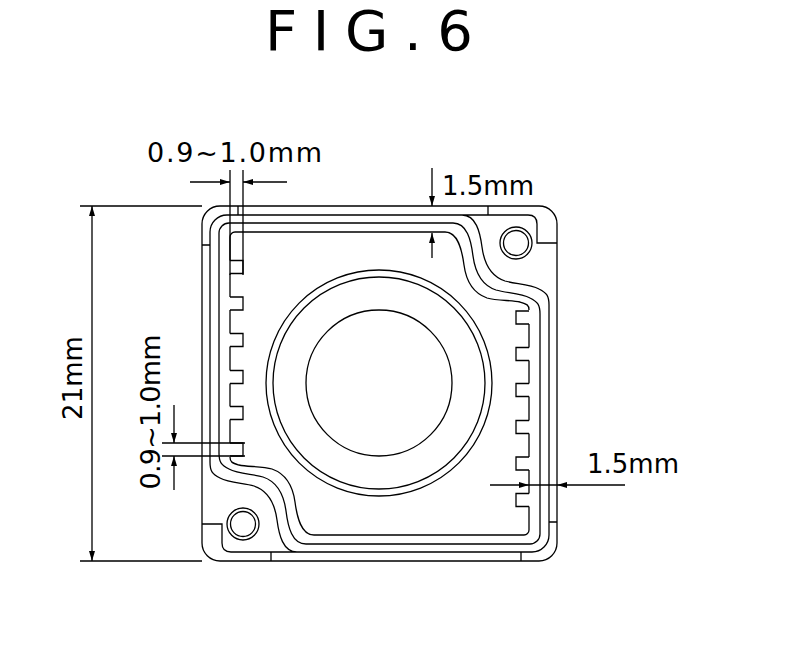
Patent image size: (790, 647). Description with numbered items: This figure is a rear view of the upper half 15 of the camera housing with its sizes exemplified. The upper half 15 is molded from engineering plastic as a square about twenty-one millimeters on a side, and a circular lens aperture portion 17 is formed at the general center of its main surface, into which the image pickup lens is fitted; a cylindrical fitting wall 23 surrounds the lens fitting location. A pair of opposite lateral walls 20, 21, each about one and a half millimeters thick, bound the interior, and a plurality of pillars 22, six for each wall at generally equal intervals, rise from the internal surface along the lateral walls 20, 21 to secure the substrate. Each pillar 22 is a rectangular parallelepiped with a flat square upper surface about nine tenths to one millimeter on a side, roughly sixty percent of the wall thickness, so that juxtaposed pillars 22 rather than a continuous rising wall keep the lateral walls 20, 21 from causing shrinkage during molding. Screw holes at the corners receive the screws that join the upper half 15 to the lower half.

The upper half 15 is at (543, 262).
The lens aperture portion 17 is at (337, 327).
The lateral wall 20 is at (557, 328).
The lateral wall 21 is at (213, 507).
The pillar 22 is at (238, 268).
The cylindrical fitting wall 23 is at (352, 498).